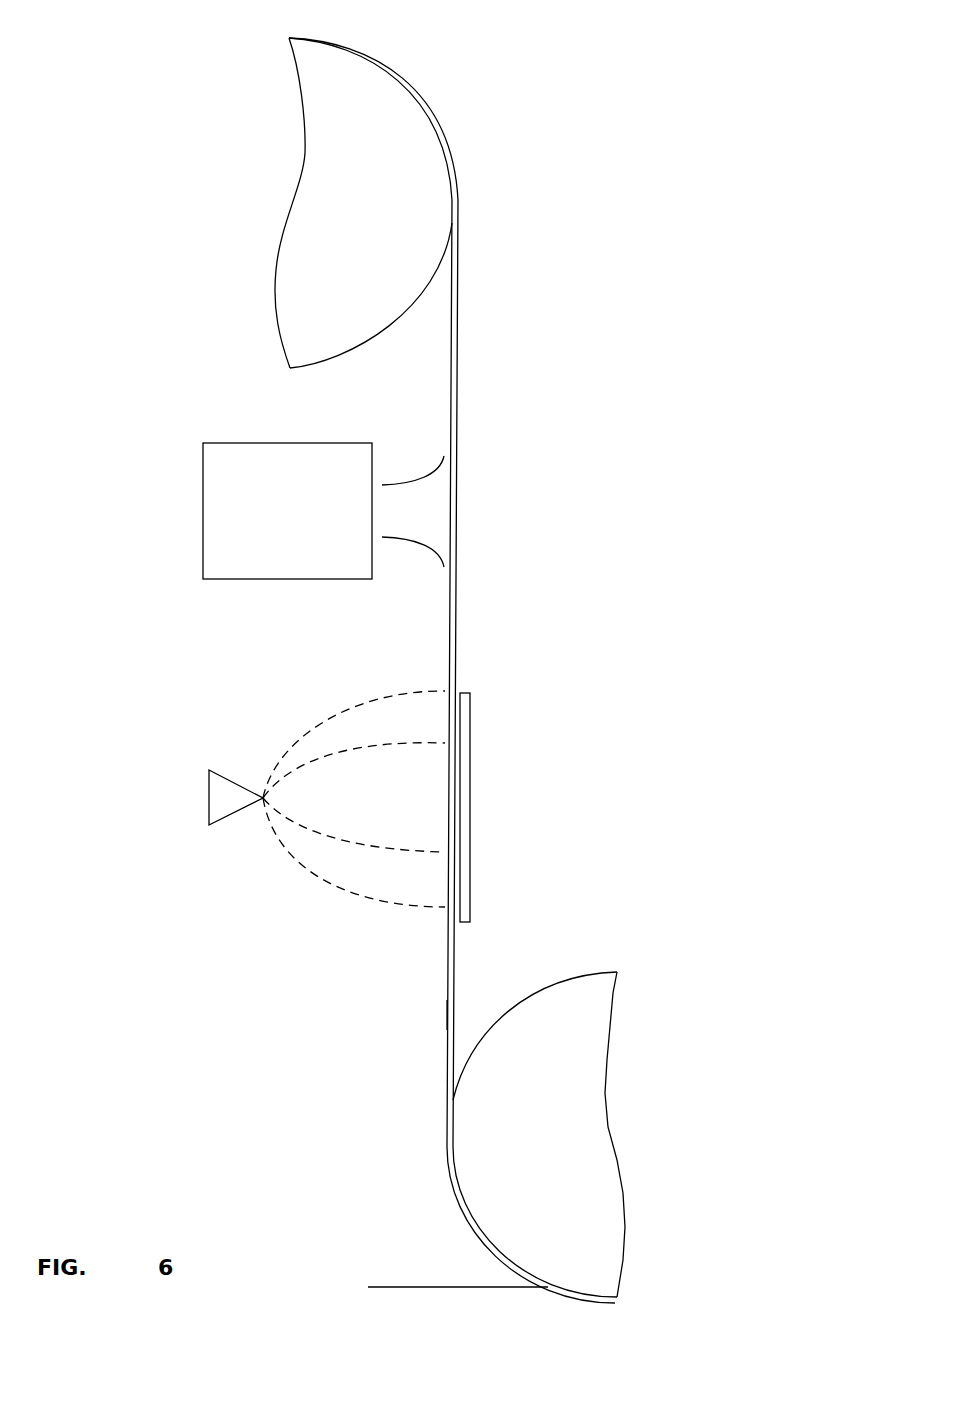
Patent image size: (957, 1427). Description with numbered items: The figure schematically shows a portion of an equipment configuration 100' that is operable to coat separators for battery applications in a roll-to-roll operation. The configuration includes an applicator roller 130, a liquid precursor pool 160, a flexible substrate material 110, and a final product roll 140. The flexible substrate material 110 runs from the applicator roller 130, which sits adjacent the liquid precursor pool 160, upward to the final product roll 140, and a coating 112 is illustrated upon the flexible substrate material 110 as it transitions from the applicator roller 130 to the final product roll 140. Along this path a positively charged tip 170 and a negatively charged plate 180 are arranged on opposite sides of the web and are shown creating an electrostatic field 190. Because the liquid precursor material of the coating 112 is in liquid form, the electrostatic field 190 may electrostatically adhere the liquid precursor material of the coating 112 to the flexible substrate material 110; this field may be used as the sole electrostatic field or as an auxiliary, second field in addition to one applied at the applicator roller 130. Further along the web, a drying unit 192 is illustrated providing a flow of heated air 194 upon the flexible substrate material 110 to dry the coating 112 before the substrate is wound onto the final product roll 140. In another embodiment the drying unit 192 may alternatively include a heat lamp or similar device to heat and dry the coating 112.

The equipment configuration 100' is at (750, 124).
The flexible substrate material 110 is at (460, 338).
The coating 112 is at (446, 1014).
The applicator roller 130 is at (568, 998).
The final product roll 140 is at (373, 102).
The liquid precursor pool 160 is at (422, 1287).
The positively charged tip 170 is at (240, 795).
The negatively charged plate 180 is at (470, 843).
The electrostatic field 190 is at (330, 880).
The drying unit 192 is at (203, 487).
The flow of heated air 194 is at (427, 503).